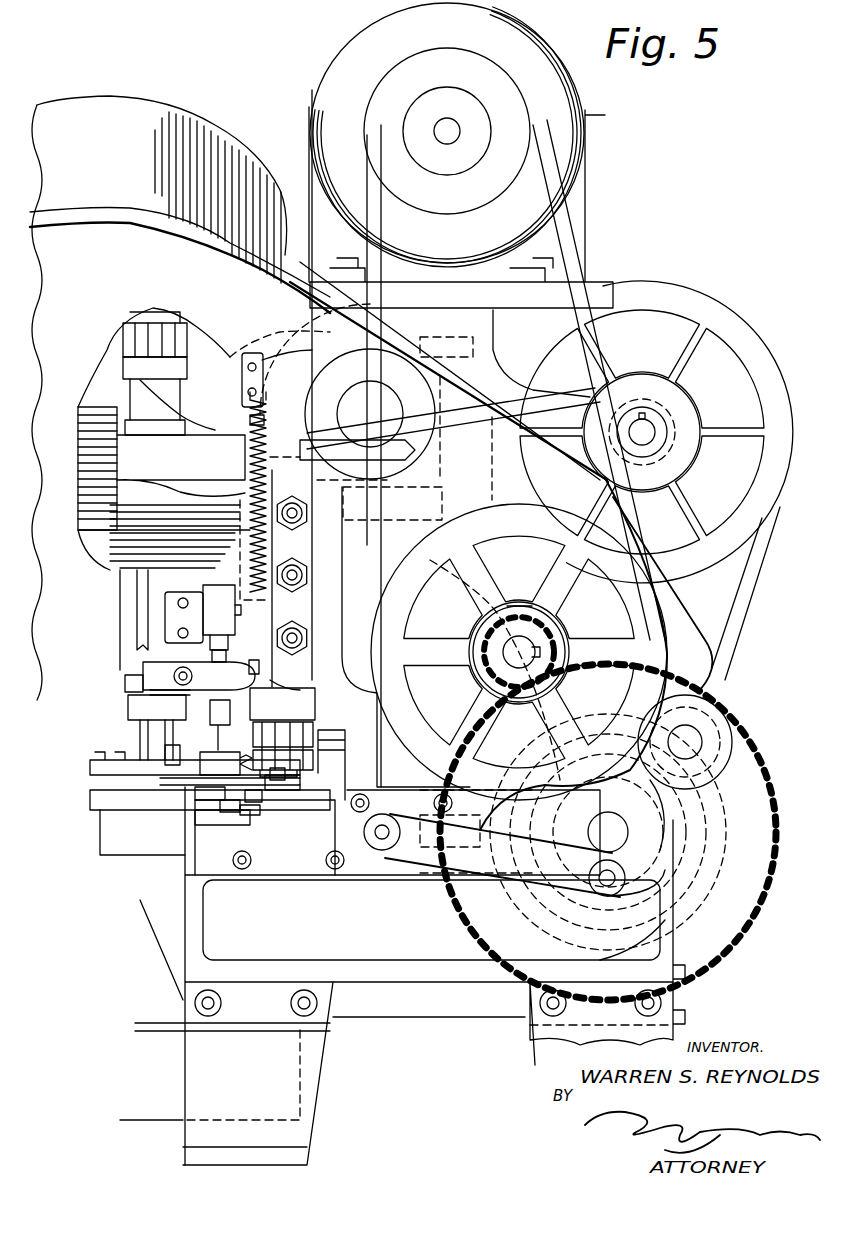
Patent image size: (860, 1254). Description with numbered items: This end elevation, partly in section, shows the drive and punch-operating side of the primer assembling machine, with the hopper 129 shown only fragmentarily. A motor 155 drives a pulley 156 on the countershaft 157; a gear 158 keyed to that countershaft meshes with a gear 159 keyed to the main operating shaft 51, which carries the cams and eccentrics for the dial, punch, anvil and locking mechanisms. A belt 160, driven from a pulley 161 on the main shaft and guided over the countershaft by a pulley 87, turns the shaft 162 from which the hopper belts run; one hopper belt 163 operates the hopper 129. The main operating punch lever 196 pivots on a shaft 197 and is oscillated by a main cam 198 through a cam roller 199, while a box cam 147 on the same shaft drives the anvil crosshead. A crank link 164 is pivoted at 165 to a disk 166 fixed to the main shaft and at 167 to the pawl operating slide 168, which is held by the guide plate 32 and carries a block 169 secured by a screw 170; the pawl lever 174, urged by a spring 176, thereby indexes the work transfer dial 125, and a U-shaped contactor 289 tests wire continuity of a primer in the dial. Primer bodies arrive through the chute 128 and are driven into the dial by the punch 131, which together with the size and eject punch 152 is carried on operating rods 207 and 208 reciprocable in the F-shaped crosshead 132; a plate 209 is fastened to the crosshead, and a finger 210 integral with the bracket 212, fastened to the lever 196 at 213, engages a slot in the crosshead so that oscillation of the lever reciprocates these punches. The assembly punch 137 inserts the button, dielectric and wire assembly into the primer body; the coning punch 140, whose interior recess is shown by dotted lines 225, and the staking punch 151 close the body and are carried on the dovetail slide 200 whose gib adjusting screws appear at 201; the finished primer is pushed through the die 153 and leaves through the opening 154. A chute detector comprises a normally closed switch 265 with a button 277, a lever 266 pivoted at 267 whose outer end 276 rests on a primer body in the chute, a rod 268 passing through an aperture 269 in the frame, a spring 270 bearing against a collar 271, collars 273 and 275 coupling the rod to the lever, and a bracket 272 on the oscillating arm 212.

The hopper 129 is at (183, 123).
The motor 155 is at (583, 117).
The bracket 212 is at (250, 318).
The fastening point 213 is at (312, 347).
The bracket 272 is at (245, 362).
The crosshead 132 is at (133, 367).
The plate 209 is at (176, 370).
The finger 210 is at (165, 408).
The collar 271 is at (250, 421).
The spring 270 is at (255, 447).
The operating rod 207 is at (140, 447).
The operating rod 208 is at (170, 456).
The adjusting screws 201 is at (300, 536).
The aperture 269 is at (252, 577).
The chute 128 is at (137, 598).
The normally closed switch 265 is at (205, 617).
The rod 268 is at (252, 600).
The button 277 is at (214, 656).
The collar 275 is at (300, 688).
The collar 273 is at (259, 665).
The dovetail slide 200 is at (300, 697).
The pivoted lever 266 is at (140, 681).
The outer end 276 is at (145, 688).
The pivot 267 is at (152, 690).
The primer body delivery punch 131 is at (142, 732).
The assembly punch 137 is at (215, 734).
The spring 176 is at (246, 760).
The staking punch 151 is at (305, 762).
The size and eject punch 152 is at (205, 749).
The work transfer dial 125 is at (135, 796).
The die 153 is at (158, 806).
The U-shaped contactor 289 is at (215, 812).
The opening 154 is at (150, 845).
The block 169 is at (210, 812).
The pawl lever 174 is at (250, 800).
The coning punch 140 is at (272, 792).
The interior recess 225 is at (270, 782).
The pawl operating slide 168 is at (215, 848).
The screw 170 is at (225, 805).
The guide plate 32 is at (250, 815).
The pivot 167 is at (380, 842).
The crank link 164 is at (418, 866).
The shaft 197 is at (388, 400).
The hopper belt 163 is at (465, 410).
The shaft 162 is at (648, 432).
The countershaft 157 is at (512, 643).
The gear 158 is at (484, 668).
The pulley 87 is at (514, 605).
The belt 160 is at (742, 607).
The pulley 156 is at (667, 607).
The main operating punch lever 196 is at (674, 630).
The gear 159 is at (752, 733).
The cam roller 199 is at (768, 773).
The box cam 147 is at (703, 815).
The main operating shaft 51 is at (612, 825).
The pulley 161 is at (662, 850).
The pivot 165 is at (615, 876).
The disk 166 is at (660, 878).
The main cam 198 is at (662, 918).